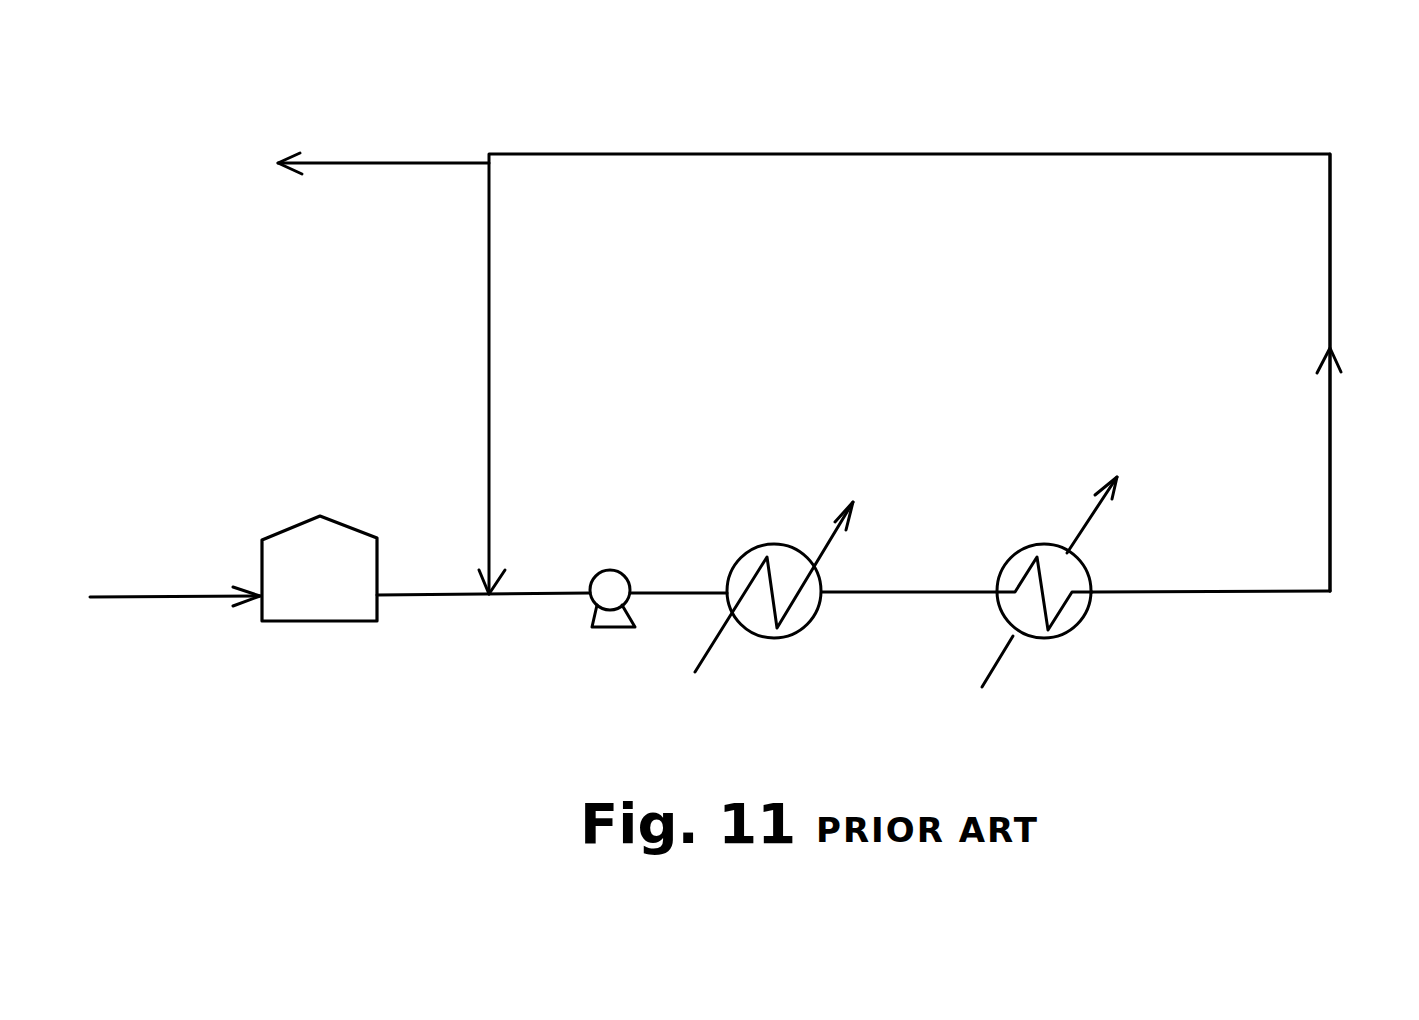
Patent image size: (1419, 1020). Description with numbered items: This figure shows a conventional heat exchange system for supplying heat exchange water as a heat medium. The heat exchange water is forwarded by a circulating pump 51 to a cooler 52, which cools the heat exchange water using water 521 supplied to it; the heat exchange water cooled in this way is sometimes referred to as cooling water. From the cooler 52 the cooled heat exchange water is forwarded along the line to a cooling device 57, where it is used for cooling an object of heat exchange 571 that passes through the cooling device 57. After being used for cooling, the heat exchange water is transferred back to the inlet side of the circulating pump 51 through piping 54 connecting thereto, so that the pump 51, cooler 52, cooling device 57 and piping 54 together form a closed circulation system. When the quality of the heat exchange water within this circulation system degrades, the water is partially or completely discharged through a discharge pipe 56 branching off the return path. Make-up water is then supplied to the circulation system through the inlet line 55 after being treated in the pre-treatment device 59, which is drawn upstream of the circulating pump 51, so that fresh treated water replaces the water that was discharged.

The circulating pump 51 is at (592, 627).
The cooler 52 is at (790, 637).
The water 521 is at (827, 537).
The piping 54 is at (1331, 552).
The inlet line 55 is at (160, 597).
The discharge pipe 56 is at (377, 158).
The cooling device 57 is at (1067, 638).
The object of heat exchange 571 is at (1088, 517).
The pre-treatment device 59 is at (300, 621).